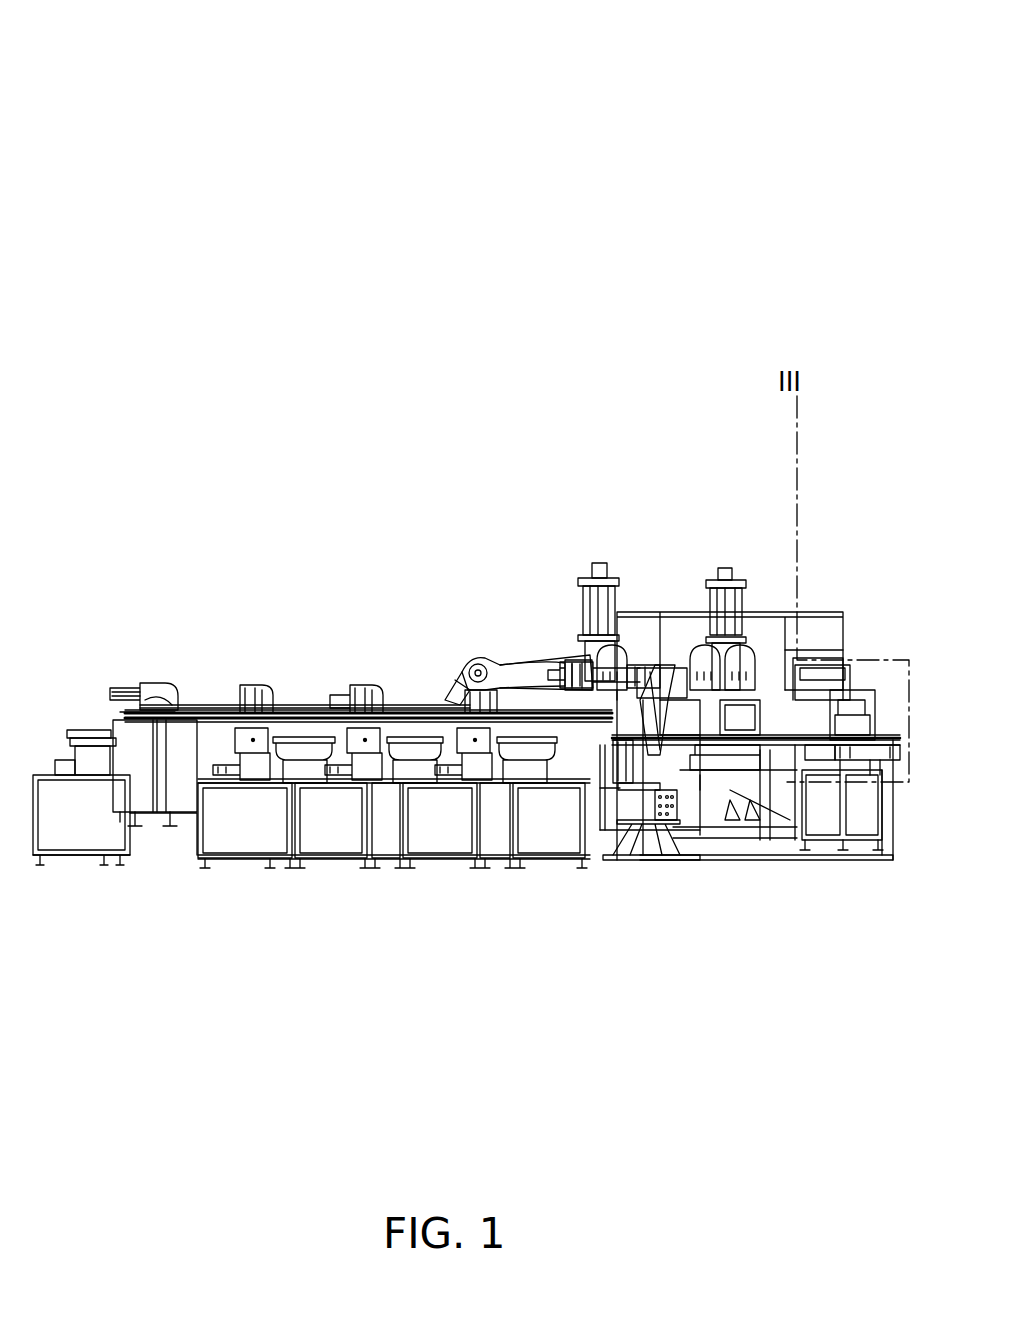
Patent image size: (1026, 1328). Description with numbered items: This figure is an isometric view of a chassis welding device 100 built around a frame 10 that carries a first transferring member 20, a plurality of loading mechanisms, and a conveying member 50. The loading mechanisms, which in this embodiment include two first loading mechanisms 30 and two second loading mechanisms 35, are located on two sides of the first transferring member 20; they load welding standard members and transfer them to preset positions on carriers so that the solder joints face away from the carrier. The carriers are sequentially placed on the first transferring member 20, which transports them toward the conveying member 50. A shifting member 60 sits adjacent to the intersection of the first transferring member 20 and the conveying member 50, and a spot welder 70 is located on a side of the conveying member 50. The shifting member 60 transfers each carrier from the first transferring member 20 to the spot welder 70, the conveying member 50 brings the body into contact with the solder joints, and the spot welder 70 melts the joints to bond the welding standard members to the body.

The chassis welding device 100 is at (230, 82).
The frame 10 is at (857, 810).
The first transferring member 20 is at (202, 716).
The first loading mechanism 30 is at (79, 735).
The second loading mechanism 35 is at (528, 775).
The conveying member 50 is at (783, 733).
The shifting member 60 is at (612, 755).
The spot welder 70 is at (591, 612).